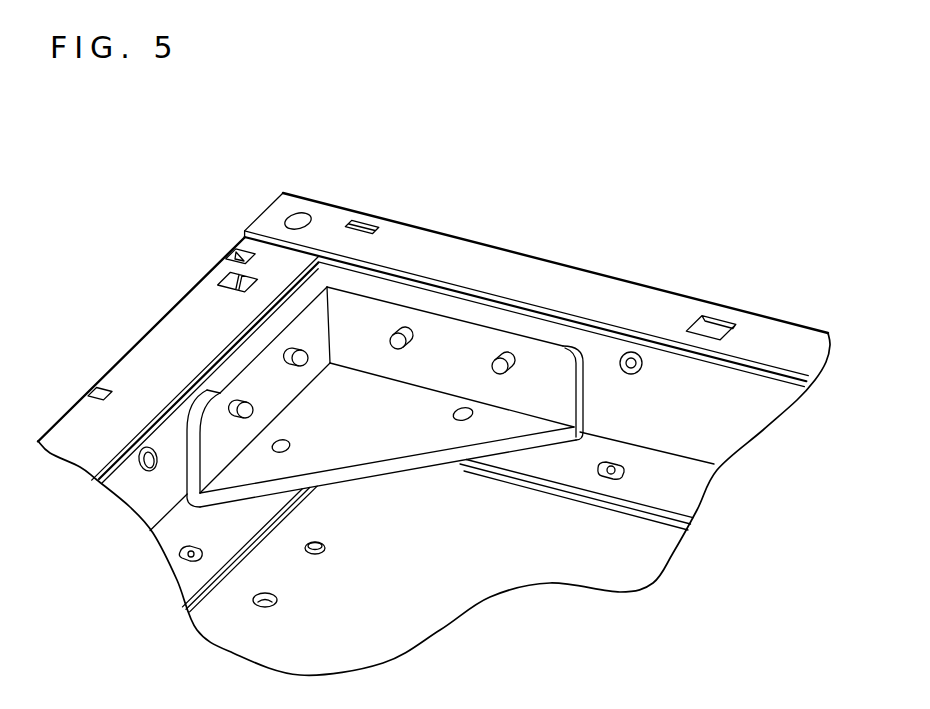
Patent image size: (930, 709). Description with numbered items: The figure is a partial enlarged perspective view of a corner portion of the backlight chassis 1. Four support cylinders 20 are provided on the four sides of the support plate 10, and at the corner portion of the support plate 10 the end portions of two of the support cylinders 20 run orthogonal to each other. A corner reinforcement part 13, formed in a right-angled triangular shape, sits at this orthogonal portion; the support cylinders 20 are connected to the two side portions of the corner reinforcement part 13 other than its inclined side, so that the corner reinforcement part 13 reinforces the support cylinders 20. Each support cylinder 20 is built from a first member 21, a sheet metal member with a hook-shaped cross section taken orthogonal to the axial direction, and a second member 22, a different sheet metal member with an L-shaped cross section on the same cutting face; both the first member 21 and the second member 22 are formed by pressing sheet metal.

The backlight chassis 1 is at (346, 161).
The support plate 10 is at (487, 577).
The corner reinforcement part 13 is at (480, 343).
The support cylinder 20 is at (177, 280).
The first member 21 is at (138, 353).
The second member 22 is at (723, 413).